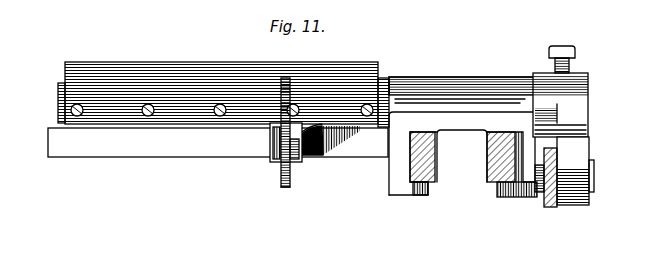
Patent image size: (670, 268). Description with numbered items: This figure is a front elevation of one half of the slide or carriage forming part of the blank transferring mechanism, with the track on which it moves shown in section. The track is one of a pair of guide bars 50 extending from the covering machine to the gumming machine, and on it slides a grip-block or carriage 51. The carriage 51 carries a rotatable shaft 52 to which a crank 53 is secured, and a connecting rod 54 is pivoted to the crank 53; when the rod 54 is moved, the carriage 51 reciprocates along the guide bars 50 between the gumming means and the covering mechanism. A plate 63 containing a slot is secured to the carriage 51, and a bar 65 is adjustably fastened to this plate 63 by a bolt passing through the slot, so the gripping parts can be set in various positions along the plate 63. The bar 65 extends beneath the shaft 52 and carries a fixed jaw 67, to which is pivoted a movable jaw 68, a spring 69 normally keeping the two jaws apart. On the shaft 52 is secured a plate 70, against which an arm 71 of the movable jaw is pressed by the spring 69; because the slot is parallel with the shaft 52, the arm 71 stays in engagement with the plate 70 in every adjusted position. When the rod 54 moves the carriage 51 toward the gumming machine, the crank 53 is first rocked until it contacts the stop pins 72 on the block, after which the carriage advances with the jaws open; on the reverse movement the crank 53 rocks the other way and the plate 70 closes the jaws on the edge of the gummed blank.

The guide bars 50 is at (490, 158).
The grip-block or carriage 51 is at (452, 90).
The rotatable shaft 52 is at (386, 78).
The crank 53 is at (581, 114).
The connecting rod 54 is at (547, 208).
The plate 63 is at (158, 148).
The bar 65 is at (270, 132).
The fixed jaw 67 is at (283, 189).
The pivoted jaw 68 is at (283, 148).
The spring 69 is at (310, 154).
The plate 70 is at (221, 63).
The arm 71 is at (289, 79).
The stop pins 72 is at (586, 132).